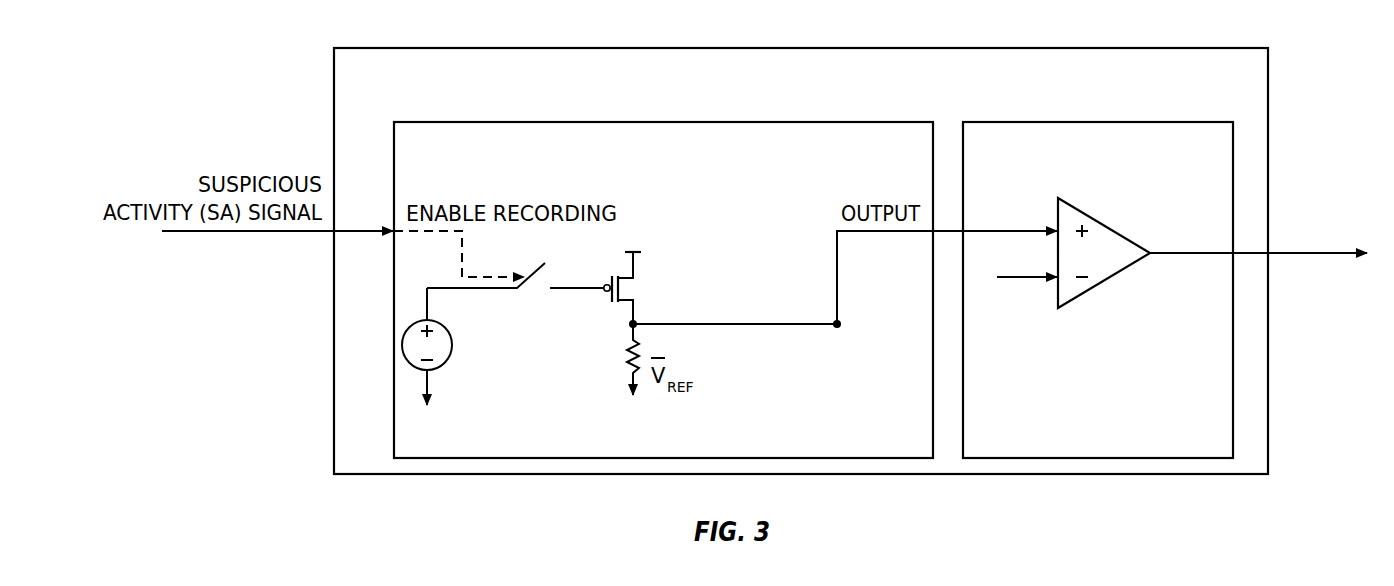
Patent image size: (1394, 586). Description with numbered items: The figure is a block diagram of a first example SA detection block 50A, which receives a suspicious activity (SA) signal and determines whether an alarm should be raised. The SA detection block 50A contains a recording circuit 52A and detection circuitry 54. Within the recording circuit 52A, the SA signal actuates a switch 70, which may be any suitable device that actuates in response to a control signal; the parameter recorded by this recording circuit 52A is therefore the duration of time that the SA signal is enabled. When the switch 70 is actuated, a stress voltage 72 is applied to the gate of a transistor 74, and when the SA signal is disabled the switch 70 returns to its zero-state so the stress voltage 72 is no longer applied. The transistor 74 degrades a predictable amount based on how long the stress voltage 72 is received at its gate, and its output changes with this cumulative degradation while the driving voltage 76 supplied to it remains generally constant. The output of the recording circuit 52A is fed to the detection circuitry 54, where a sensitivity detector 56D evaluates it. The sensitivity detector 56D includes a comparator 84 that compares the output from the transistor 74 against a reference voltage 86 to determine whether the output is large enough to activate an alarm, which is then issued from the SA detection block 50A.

The SA detection block 50A is at (800, 48).
The recording circuit 52A is at (665, 122).
The detection circuitry 54 is at (1098, 122).
The switch 70 is at (535, 268).
The stress voltage 72 is at (403, 338).
The transistor 74 is at (626, 277).
The driving voltage 76 is at (636, 224).
The comparator 84 is at (1103, 223).
The reference voltage 86 is at (1019, 284).
The sensitivity detector 56D is at (1117, 289).